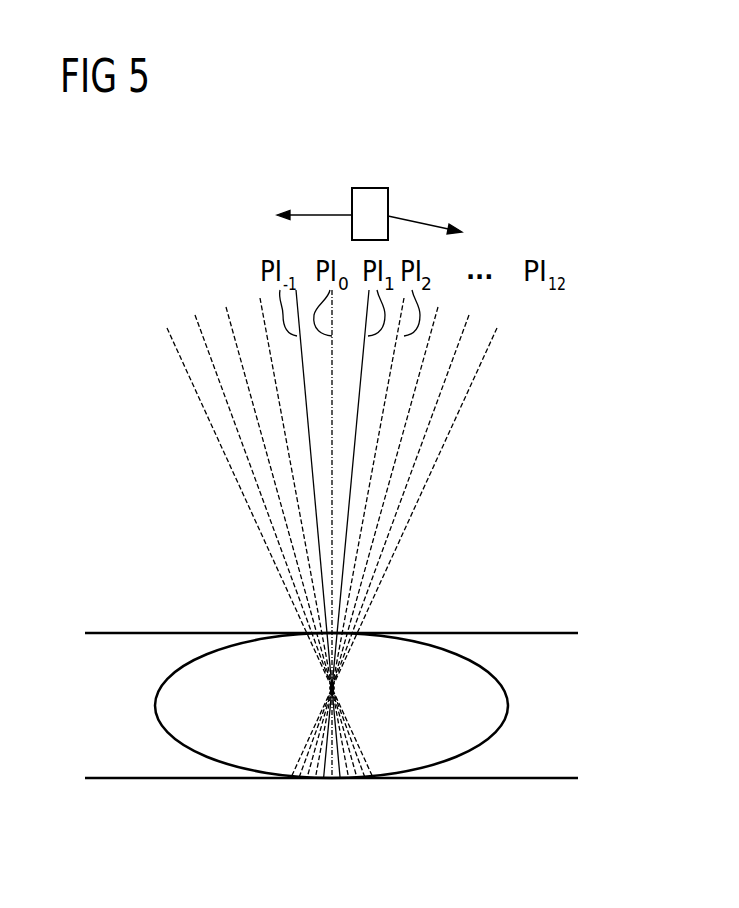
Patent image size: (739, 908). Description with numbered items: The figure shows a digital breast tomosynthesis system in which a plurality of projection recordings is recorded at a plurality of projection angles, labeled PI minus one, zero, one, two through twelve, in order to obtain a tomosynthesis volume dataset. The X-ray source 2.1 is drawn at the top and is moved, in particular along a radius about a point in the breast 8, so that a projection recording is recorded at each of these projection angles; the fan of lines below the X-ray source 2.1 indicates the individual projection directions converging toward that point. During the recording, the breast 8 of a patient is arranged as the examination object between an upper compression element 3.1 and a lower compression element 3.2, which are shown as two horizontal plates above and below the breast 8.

The X-ray source 2.1 is at (371, 188).
The upper compression element 3.1 is at (542, 632).
The lower compression element 3.2 is at (542, 780).
The breast 8 is at (508, 705).